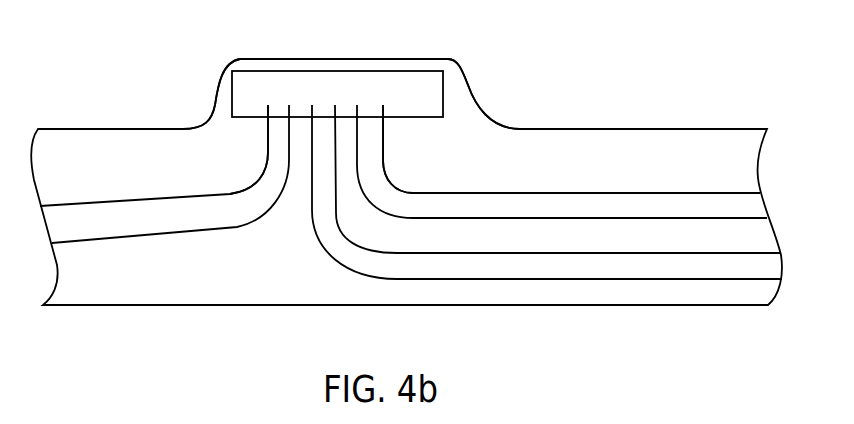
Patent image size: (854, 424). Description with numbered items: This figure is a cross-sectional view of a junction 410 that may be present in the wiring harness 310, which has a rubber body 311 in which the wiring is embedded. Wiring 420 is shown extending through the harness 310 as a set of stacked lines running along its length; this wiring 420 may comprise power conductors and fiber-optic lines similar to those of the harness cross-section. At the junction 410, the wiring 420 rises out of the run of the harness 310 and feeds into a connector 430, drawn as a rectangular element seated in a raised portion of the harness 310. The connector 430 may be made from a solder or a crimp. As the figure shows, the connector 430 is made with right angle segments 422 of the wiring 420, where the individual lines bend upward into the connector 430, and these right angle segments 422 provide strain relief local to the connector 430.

The wiring harness 310 is at (641, 113).
The rubber body 311 is at (95, 294).
The junction 410 is at (227, 96).
The wiring 420 is at (70, 218).
The right angle segments 422 is at (268, 167).
The connector 430 is at (403, 78).